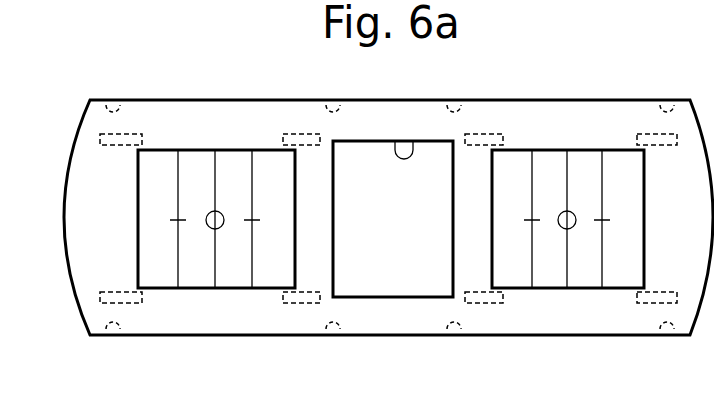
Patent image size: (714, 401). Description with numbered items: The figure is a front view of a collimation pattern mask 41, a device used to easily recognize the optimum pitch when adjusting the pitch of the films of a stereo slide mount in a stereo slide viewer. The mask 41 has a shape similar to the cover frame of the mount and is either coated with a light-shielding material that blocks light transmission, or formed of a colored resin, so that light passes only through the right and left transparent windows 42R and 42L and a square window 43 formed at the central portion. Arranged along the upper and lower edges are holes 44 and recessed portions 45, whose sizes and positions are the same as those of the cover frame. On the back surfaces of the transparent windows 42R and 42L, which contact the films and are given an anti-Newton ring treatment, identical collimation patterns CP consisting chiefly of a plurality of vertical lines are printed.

The collimation pattern mask 41 is at (263, 88).
The left transparent window 42L is at (160, 167).
The right transparent window 42R is at (515, 173).
The square window 43 is at (395, 141).
The holes 44 is at (385, 217).
The recessed portions 45 is at (388, 217).
The collimation patterns CP is at (180, 177).